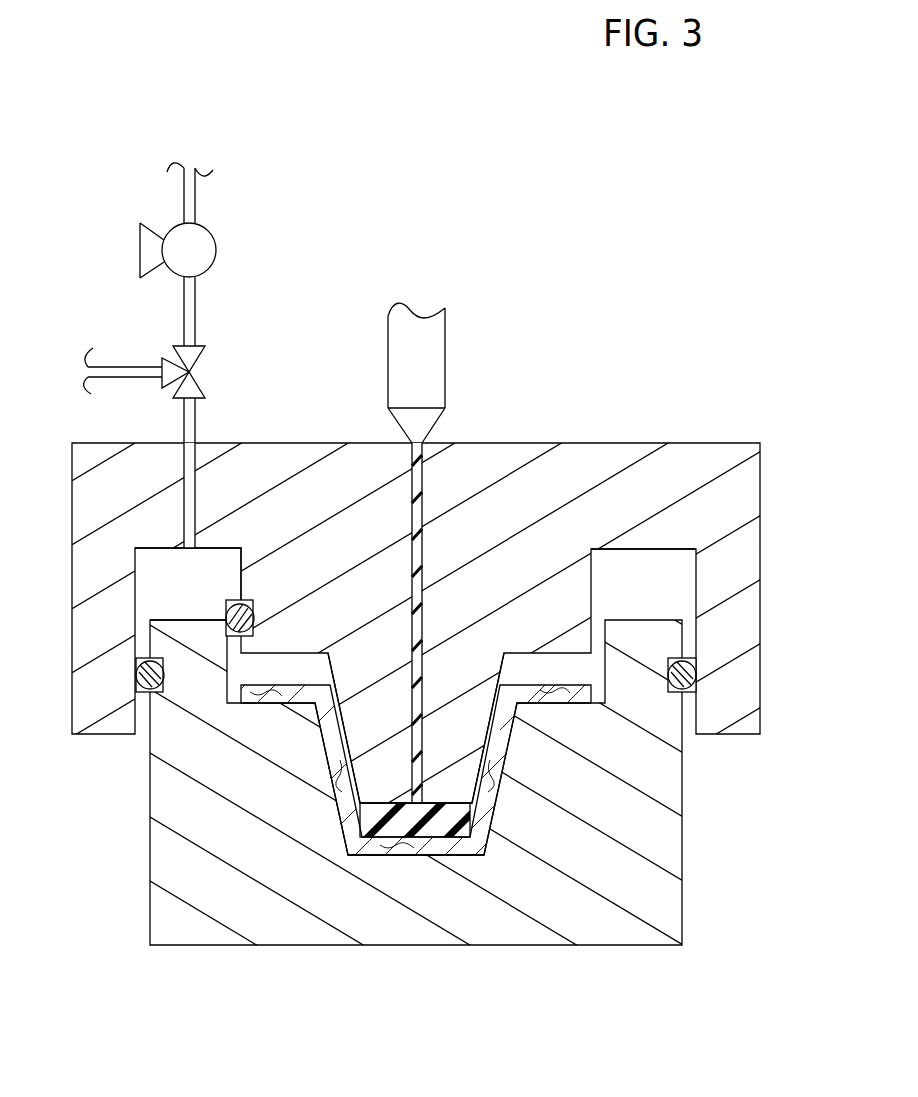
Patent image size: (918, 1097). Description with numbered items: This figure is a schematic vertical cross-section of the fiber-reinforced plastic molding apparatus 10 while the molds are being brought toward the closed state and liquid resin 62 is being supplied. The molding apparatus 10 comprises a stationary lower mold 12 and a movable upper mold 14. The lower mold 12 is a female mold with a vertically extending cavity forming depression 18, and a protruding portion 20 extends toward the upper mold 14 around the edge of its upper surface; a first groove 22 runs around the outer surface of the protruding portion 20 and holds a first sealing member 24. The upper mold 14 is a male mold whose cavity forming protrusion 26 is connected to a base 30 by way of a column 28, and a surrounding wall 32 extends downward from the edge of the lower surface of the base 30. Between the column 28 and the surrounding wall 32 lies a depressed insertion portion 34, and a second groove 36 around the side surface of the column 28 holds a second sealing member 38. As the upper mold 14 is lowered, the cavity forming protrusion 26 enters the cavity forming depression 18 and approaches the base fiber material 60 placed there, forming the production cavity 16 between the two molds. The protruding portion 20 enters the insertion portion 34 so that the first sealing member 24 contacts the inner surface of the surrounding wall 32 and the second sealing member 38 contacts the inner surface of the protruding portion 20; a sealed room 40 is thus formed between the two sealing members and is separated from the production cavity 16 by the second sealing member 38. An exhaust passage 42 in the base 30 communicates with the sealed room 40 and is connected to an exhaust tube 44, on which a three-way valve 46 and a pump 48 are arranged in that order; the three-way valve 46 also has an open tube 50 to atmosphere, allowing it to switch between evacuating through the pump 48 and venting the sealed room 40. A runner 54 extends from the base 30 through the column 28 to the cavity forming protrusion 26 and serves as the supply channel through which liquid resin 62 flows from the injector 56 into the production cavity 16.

The fiber-reinforced plastic molding apparatus 10 is at (683, 271).
The lower mold 12 is at (695, 889).
The upper mold 14 is at (694, 436).
The production cavity 16 is at (280, 687).
The cavity forming depression 18 is at (435, 822).
The protruding portion 20 is at (668, 641).
The first groove 22 is at (698, 660).
The first sealing member 24 is at (698, 656).
The cavity forming protrusion 26 is at (462, 793).
The column 28 is at (573, 582).
The base 30 is at (583, 458).
The surrounding wall 32 is at (753, 594).
The insertion portion 34 is at (676, 550).
The second groove 36 is at (225, 626).
The second sealing member 38 is at (226, 611).
The sealed room 40 is at (138, 598).
The exhaust passage 42 is at (183, 456).
The exhaust tube 44 is at (192, 318).
The three-way valve 46 is at (198, 352).
The pump 48 is at (208, 258).
The open tube 50 is at (125, 362).
The runner 54 is at (408, 508).
The injector 56 is at (437, 345).
The base fiber material 60 is at (456, 848).
The liquid resin 62 is at (390, 810).